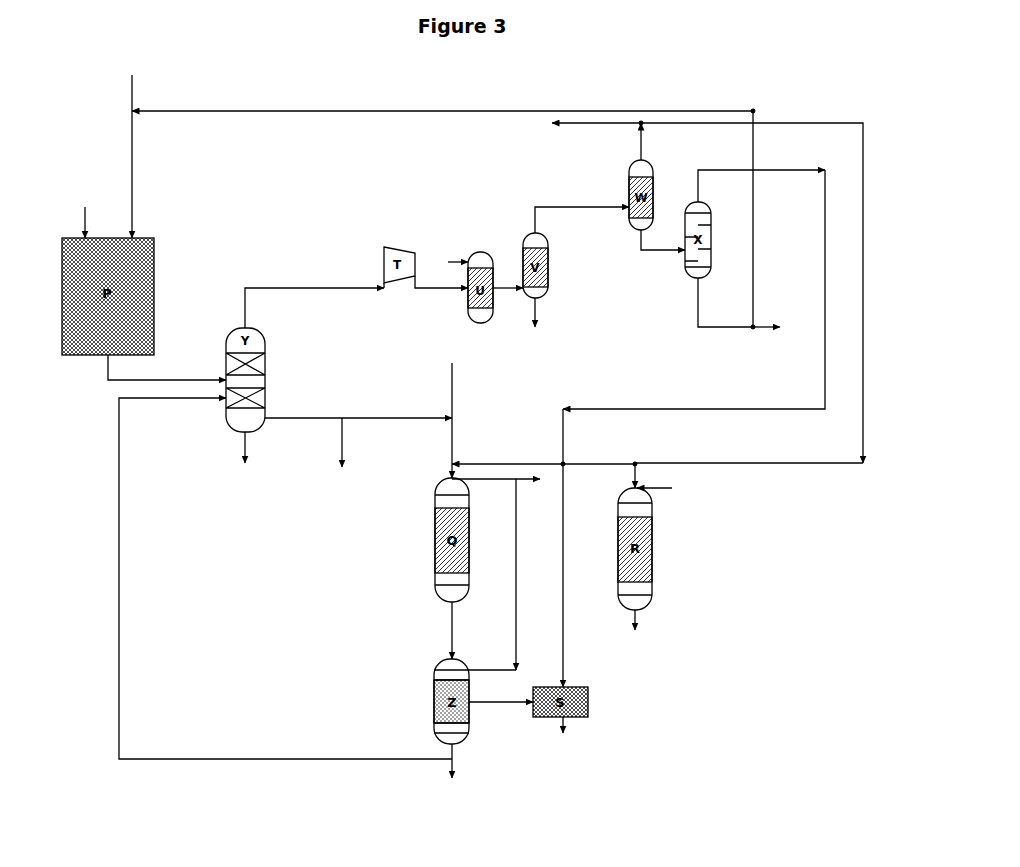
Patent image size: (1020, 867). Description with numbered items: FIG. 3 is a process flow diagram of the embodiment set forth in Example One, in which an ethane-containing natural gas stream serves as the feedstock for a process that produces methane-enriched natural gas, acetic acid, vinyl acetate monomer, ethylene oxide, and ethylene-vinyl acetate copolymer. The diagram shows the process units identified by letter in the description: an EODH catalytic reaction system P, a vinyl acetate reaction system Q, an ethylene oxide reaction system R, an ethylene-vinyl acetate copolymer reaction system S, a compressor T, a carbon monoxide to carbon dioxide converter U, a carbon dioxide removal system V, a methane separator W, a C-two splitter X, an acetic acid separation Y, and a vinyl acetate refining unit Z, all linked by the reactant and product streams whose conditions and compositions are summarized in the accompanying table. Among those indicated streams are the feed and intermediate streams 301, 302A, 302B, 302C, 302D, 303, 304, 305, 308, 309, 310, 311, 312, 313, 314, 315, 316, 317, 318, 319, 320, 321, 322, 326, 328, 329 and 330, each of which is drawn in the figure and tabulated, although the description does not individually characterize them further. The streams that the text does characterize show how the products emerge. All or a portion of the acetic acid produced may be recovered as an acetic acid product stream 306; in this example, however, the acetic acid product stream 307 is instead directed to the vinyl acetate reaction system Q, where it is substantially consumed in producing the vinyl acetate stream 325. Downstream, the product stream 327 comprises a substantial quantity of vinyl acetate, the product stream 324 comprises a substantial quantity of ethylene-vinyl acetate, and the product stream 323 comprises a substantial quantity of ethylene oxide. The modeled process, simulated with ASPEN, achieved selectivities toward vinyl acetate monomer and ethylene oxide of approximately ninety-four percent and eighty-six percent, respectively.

The hydrocarbon feed stream 301 is at (131, 150).
The hydrogen stream to reactor P 302A is at (100, 222).
The hydrogen stream to unit U 302B is at (450, 255).
The hydrogen stream to column Q 302C is at (449, 412).
The hydrogen stream to unit R 302D is at (671, 490).
The reactor effluent stream 303 is at (167, 367).
The separator overhead vapor stream 304 is at (314, 305).
The separator bottoms stream 305 is at (256, 447).
The acetic acid product stream 306 is at (340, 451).
The acetic acid product stream 307 is at (358, 426).
The compressed gas stream 308 is at (441, 278).
The treated gas stream 309 is at (508, 278).
The gas stream to unit W 310 is at (571, 220).
The overhead gas stream from W 311 is at (628, 140).
The recycle gas stream 312 is at (748, 305).
The purge gas stream 313 is at (590, 133).
The liquid stream from V 314 is at (524, 324).
The liquid stream from W to X 315 is at (663, 240).
The overhead stream from X 316 is at (756, 177).
The bottoms stream from X 317 is at (712, 302).
The recycle stream to feed 318 is at (443, 210).
The product stream 319 is at (779, 327).
The overhead stream from column Q 320 is at (543, 457).
The stream to unit S 321 is at (694, 316).
The feed stream to unit S 322 is at (572, 548).
The ethylene oxide product stream 323 is at (633, 629).
The ethylene-vinyl acetate product stream 324 is at (562, 734).
The vinyl acetate stream 325 is at (440, 630).
The recycle stream to Z 326 is at (492, 574).
The vinyl acetate product stream 327 is at (501, 710).
The recycle stream to separator Y 328 is at (285, 578).
The bottoms stream from Z 329 is at (447, 770).
The overhead branch stream 330 is at (499, 489).